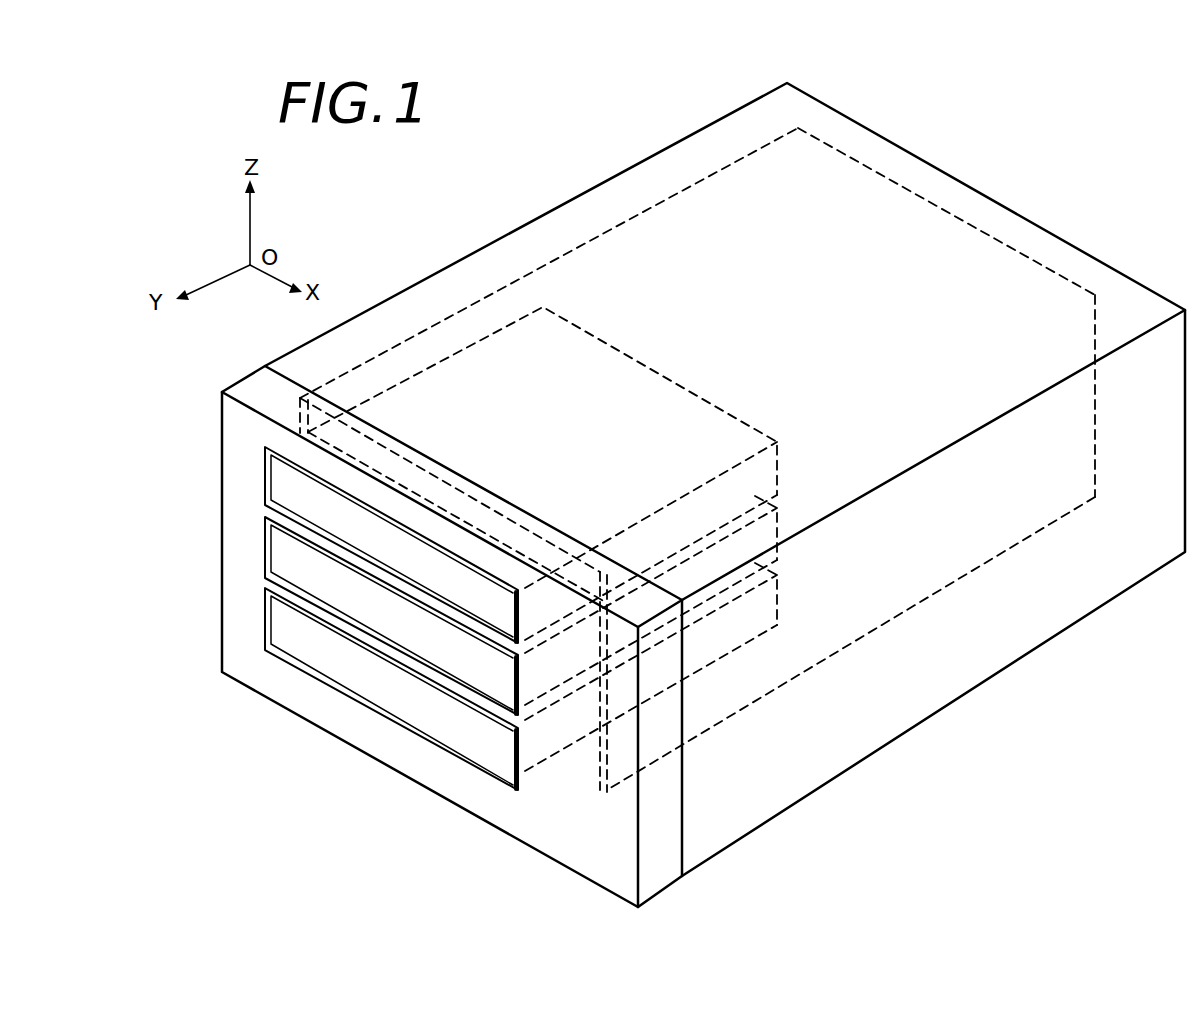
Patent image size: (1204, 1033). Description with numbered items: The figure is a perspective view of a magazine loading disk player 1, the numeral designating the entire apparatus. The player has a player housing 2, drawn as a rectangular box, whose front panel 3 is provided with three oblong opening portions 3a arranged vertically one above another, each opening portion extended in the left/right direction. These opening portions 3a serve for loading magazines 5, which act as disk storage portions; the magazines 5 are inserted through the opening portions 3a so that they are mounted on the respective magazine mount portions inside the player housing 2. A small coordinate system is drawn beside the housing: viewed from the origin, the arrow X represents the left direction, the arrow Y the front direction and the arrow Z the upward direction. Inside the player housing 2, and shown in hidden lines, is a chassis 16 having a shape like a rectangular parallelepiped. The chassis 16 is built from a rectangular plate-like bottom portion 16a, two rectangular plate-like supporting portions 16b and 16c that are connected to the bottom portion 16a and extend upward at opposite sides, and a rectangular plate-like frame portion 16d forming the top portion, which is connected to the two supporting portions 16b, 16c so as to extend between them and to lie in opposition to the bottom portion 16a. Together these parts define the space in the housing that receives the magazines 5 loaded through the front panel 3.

The magazine loading disk player 1 is at (465, 236).
The player housing 2 is at (975, 182).
The front panel 3 is at (345, 733).
The opening portions 3a is at (386, 520).
The magazines 5 is at (272, 488).
The chassis 16 is at (629, 242).
The bottom portion 16a is at (590, 790).
The supporting portion 16b is at (827, 652).
The supporting portion 16c is at (300, 397).
The frame portion 16d is at (697, 185).